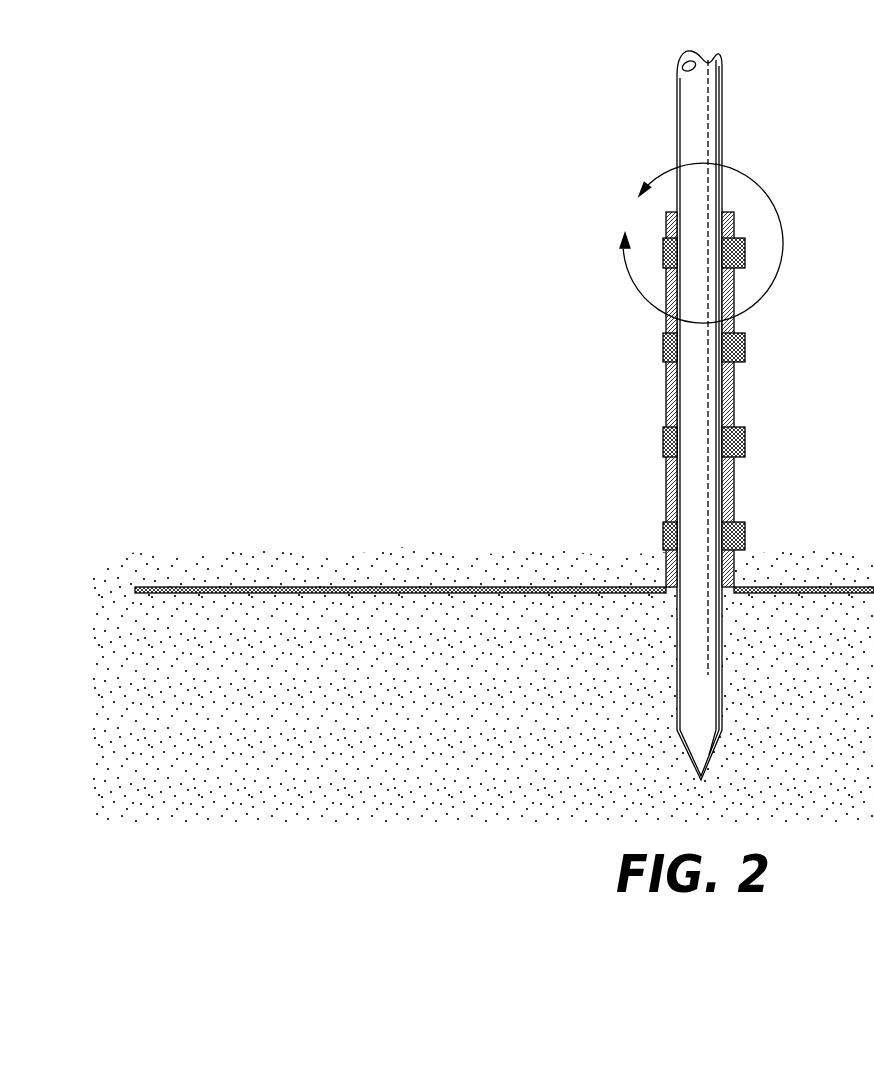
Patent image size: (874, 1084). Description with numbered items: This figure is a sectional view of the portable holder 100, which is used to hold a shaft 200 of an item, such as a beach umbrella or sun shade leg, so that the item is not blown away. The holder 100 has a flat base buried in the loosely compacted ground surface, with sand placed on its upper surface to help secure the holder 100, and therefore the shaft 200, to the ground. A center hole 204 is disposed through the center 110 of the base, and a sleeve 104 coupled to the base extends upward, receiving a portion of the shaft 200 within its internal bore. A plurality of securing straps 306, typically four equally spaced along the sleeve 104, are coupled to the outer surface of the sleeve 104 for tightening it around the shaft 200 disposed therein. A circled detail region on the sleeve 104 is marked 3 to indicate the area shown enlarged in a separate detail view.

The portable holder 100 is at (516, 106).
The sleeve 104 is at (738, 219).
The center 110 is at (749, 576).
The shaft 200 is at (695, 108).
The center hole 204 is at (732, 598).
The securing straps 306 is at (745, 349).
The detail view circle indicating FIG. 3 is at (700, 243).